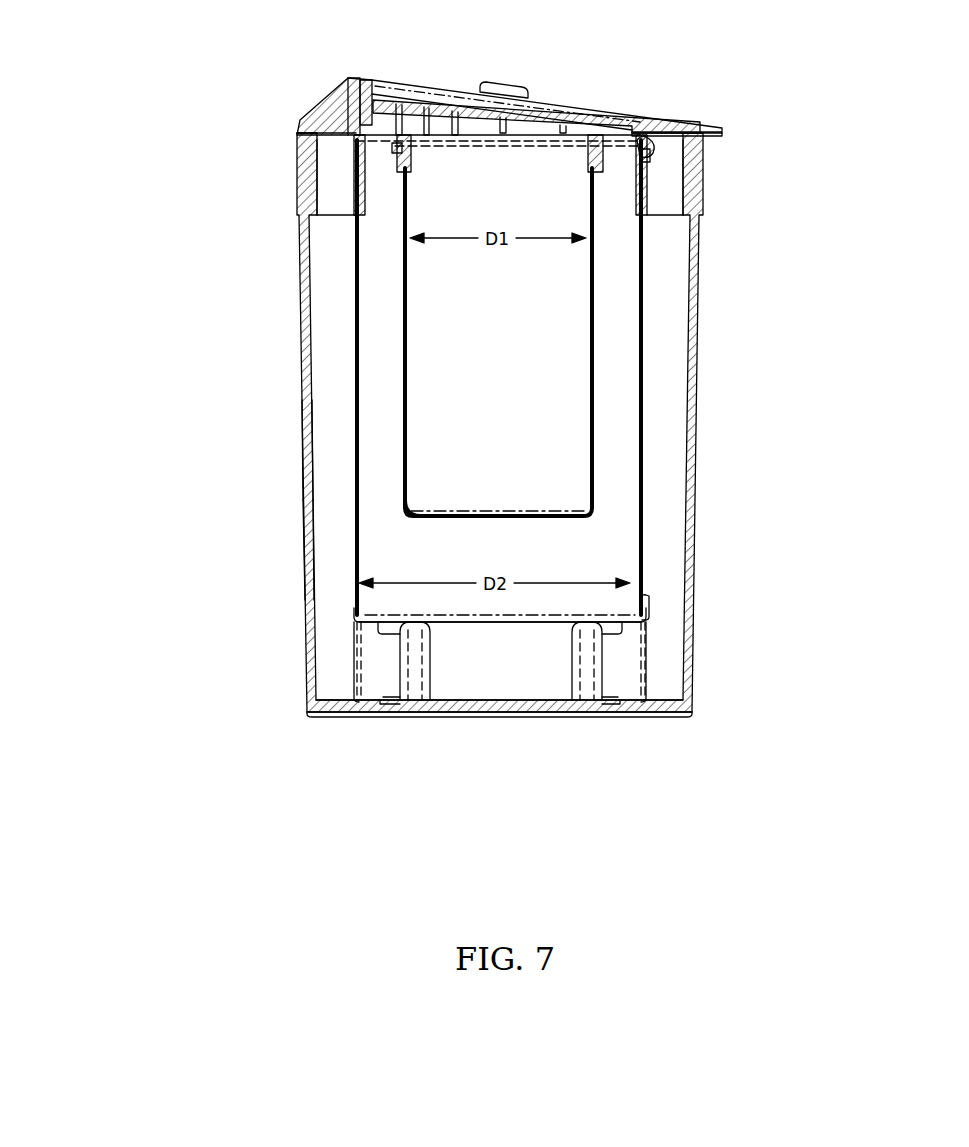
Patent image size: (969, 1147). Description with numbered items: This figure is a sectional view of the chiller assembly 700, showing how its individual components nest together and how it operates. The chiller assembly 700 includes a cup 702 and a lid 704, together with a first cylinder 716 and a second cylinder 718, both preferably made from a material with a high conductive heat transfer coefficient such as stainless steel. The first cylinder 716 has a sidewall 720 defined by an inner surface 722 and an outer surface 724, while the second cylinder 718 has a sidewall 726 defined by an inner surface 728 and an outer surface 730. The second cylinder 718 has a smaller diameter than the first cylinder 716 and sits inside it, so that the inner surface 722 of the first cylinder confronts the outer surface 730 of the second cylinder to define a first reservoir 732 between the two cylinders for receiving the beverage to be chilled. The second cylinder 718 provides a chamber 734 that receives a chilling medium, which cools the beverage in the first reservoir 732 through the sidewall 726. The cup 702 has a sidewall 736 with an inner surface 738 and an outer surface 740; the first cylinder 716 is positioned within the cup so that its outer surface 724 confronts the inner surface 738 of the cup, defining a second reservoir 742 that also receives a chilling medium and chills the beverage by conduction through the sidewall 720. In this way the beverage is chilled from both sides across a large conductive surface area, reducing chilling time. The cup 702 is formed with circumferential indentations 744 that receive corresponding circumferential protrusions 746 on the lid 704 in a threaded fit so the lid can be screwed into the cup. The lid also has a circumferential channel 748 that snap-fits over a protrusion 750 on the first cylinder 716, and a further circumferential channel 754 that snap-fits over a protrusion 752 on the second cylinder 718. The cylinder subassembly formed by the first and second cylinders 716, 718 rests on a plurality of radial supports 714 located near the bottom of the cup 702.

The chiller assembly 700 is at (108, 388).
The cup 702 is at (712, 471).
The lid 704 is at (564, 90).
The radial supports 714 is at (407, 654).
The first cylinder 716 is at (652, 333).
The second cylinder 718 is at (602, 290).
The sidewall 720 is at (643, 421).
The inner surface 722 is at (641, 522).
The outer surface 724 is at (642, 543).
The sidewall 726 is at (405, 412).
The inner surface 728 is at (405, 413).
The outer surface 730 is at (404, 493).
The first reservoir 732 is at (375, 327).
The chamber 734 is at (432, 337).
The sidewall 736 is at (306, 552).
The inner surface 738 is at (318, 663).
The outer surface 740 is at (308, 680).
The second reservoir 742 is at (325, 397).
The circumferential indentations 744 is at (303, 178).
The circumferential protrusions 746 is at (305, 197).
The circumferential channel 748 is at (345, 143).
The protrusion 750 is at (345, 108).
The protrusion 752 is at (395, 150).
The circumferential channel 754 is at (403, 145).